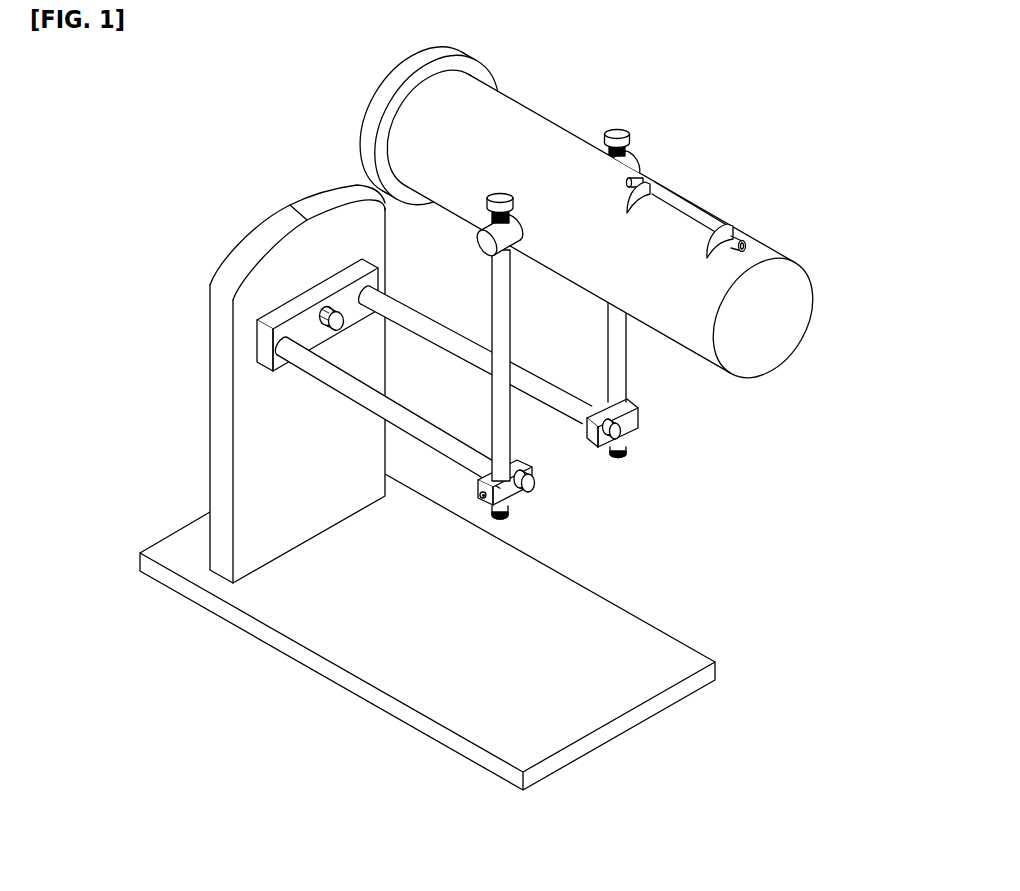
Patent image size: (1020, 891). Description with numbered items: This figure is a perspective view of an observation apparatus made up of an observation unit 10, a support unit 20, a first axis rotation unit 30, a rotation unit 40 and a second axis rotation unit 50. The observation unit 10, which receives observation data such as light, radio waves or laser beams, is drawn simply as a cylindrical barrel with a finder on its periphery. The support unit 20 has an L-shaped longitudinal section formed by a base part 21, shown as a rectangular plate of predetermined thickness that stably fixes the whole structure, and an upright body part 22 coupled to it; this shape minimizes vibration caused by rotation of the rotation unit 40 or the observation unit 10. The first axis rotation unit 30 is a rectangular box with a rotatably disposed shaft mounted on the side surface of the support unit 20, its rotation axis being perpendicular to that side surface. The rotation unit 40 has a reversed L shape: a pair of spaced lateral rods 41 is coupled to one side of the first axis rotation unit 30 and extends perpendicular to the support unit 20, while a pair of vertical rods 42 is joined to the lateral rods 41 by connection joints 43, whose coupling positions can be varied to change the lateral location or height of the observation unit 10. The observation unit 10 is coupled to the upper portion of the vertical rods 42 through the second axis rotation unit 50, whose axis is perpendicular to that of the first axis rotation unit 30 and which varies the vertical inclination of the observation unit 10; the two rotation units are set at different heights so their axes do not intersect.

The observation unit 10 is at (523, 128).
The support unit 20 is at (382, 487).
The base part 21 is at (175, 550).
The body part 22 is at (222, 472).
The first axis rotation unit 30 is at (327, 318).
The rotation unit 40 is at (472, 426).
The lateral rod 41 is at (463, 460).
The vertical rod 42 is at (534, 476).
The connection joint 43 is at (518, 497).
The second axis rotation unit 50 is at (480, 247).